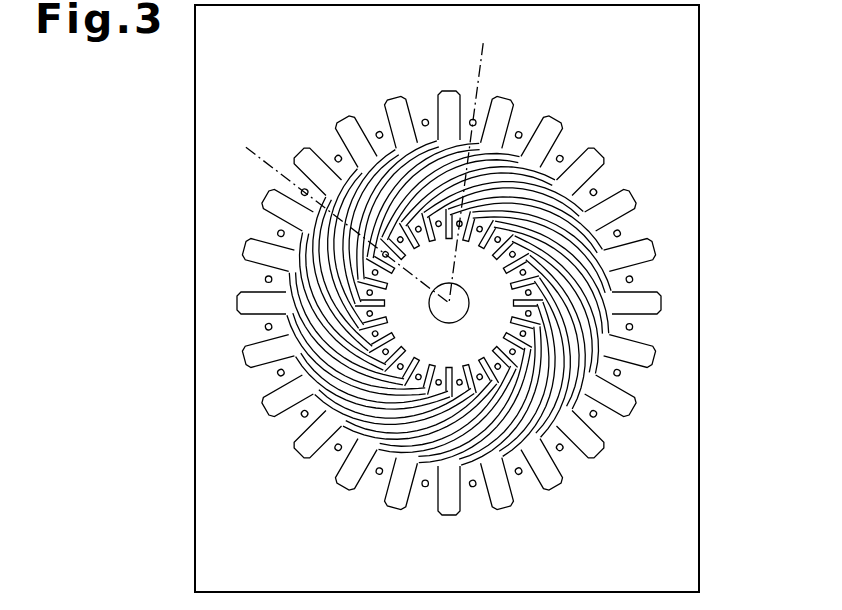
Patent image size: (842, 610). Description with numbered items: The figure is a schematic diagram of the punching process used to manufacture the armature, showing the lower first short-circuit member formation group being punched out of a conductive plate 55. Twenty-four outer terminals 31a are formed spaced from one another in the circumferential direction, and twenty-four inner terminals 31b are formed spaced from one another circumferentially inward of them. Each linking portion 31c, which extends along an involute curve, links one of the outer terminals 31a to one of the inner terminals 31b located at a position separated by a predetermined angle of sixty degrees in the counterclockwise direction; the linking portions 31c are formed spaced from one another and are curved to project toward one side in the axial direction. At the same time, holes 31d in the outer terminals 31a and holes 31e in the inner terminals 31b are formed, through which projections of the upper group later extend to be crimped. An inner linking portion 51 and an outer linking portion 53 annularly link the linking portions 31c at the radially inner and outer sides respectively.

The outer terminals 31a is at (568, 160).
The inner terminals 31b is at (431, 235).
The linking portions 31c is at (447, 163).
The holes 31d is at (520, 132).
The holes 31e is at (497, 250).
The inner linking portion 51 is at (472, 360).
The outer linking portion 53 is at (660, 84).
The conductive plate 55 is at (699, 57).